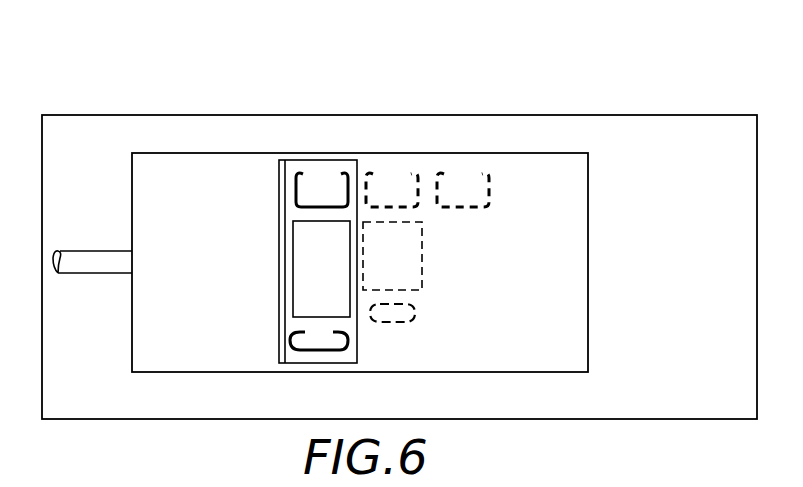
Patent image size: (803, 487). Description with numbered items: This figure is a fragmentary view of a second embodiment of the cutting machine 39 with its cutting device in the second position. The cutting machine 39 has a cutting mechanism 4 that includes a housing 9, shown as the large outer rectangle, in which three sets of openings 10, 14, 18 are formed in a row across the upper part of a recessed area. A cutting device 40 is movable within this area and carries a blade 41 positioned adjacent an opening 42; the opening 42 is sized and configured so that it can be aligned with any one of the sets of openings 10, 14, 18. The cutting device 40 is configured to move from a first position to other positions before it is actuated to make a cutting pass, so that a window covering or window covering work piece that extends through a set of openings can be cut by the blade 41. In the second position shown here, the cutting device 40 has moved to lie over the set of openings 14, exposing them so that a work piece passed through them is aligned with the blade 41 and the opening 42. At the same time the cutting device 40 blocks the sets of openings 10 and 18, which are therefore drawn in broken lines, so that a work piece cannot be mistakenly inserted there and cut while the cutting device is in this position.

The cutting mechanism 4 is at (203, 103).
The housing 9 is at (687, 115).
The set of openings 10 is at (388, 143).
The set of openings 14 is at (313, 143).
The set of openings 18 is at (455, 143).
The cutting machine 39 is at (105, 82).
The cutting device 40 is at (543, 150).
The blade 41 is at (284, 243).
The opening 42 is at (292, 288).